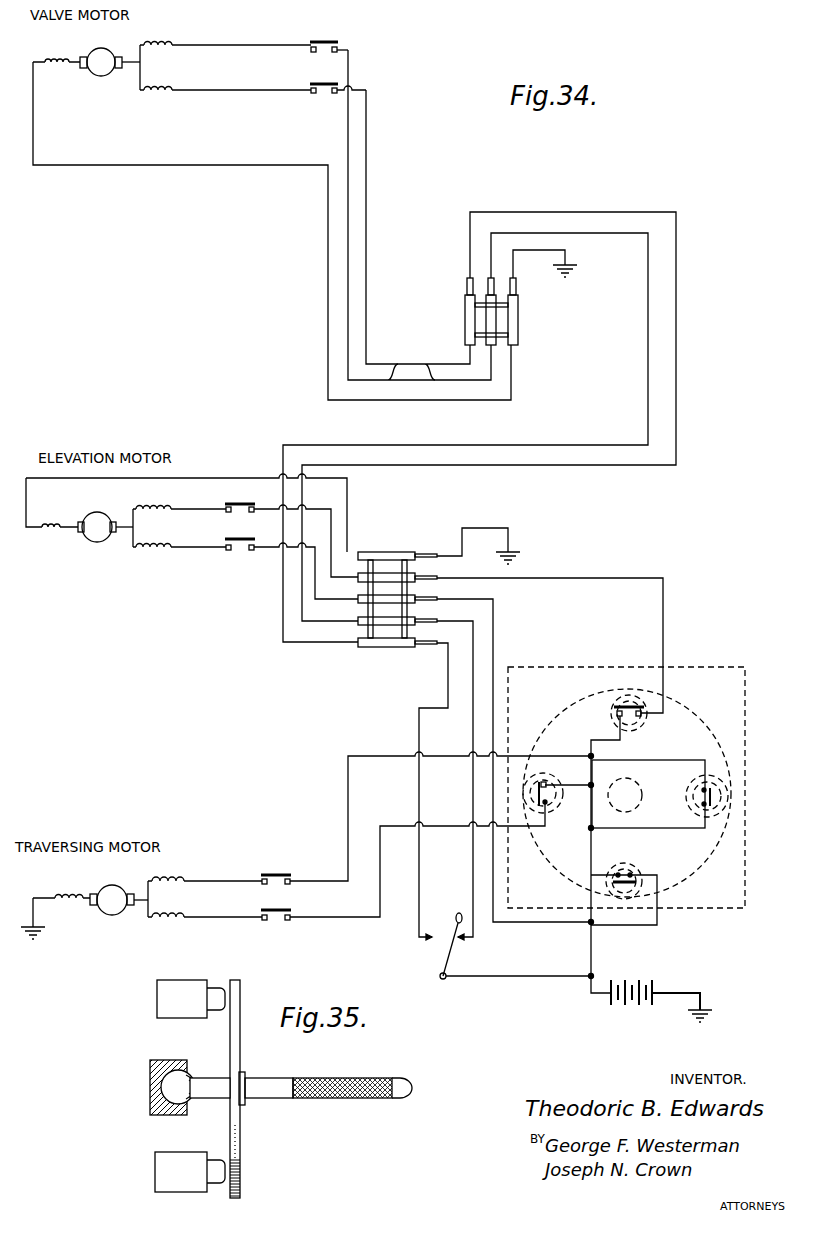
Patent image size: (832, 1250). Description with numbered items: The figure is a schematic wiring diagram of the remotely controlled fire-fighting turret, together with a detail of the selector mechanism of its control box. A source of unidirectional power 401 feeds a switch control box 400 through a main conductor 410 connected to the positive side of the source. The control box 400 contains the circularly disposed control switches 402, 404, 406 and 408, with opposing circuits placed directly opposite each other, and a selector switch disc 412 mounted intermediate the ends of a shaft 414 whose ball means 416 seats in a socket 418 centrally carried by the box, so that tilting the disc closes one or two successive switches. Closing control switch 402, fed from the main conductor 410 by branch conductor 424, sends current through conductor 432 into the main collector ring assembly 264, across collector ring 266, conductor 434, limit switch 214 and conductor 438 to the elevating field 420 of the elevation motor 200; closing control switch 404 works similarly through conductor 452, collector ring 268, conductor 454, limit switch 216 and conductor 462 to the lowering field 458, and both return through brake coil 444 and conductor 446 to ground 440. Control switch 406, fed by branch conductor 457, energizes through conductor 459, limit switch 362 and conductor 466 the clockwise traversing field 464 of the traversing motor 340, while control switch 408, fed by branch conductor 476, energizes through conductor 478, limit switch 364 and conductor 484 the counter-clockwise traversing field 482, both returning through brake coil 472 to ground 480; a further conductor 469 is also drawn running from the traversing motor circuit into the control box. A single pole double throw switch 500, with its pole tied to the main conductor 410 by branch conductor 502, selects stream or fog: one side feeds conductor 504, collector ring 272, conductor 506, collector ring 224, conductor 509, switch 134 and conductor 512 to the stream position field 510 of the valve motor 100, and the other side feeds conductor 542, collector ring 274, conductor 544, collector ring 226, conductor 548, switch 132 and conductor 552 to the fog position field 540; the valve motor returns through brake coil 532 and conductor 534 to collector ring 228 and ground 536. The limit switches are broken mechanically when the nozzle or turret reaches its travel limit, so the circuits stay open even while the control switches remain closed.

In FIG. 34, the motor 100 is at (103, 76).
In FIG. 34, the switch 132 is at (330, 30).
In FIG. 34, the switch 134 is at (323, 96).
In FIG. 34, the motor 200 is at (84, 541).
In FIG. 34, the switch 214 is at (265, 500).
In FIG. 34, the switch 216 is at (232, 556).
In FIG. 34, the collector ring 224 is at (462, 326).
In FIG. 34, the collector ring 226 is at (498, 350).
In FIG. 34, the collector ring 228 is at (520, 338).
In FIG. 34, the main collector ring assembly 264 is at (383, 548).
In FIG. 34, the collector ring 266 is at (393, 577).
In FIG. 34, the collector ring 268 is at (360, 600).
In FIG. 34, the collector ring 272 is at (362, 628).
In FIG. 34, the collector ring 274 is at (383, 641).
In FIG. 34, the motor 340 is at (110, 915).
In FIG. 34, the switch 362 is at (290, 878).
In FIG. 34, the switch 364 is at (275, 923).
In FIG. 34, the switch control box 400 is at (737, 667).
In FIG. 34, the source of unidirectional power 401 is at (665, 980).
In FIG. 34, the control switch 402 is at (612, 704).
In FIG. 35, the control switch 402 is at (160, 1003).
In FIG. 34, the control switch 404 is at (632, 888).
In FIG. 35, the control switch 404 is at (160, 1170).
In FIG. 34, the control switch 406 is at (716, 796).
In FIG. 34, the control switch 408 is at (548, 814).
In FIG. 34, the main conductor 410 is at (591, 953).
In FIG. 34, the selector switch disc 412 is at (718, 740).
In FIG. 35, the selector switch disc 412 is at (241, 1148).
In FIG. 35, the shaft 414 is at (272, 1100).
In FIG. 35, the ball means 416 is at (150, 1086).
In FIG. 35, the socket 418 is at (160, 1062).
In FIG. 34, the elevating field 420 is at (160, 503).
In FIG. 34, the branch conductor 424 is at (608, 740).
In FIG. 34, the conductor 432 is at (663, 652).
In FIG. 34, the conductor 434 is at (325, 565).
In FIG. 34, the conductor 438 is at (218, 512).
In FIG. 34, the ground 440 is at (510, 548).
In FIG. 34, the brake coil 444 is at (48, 538).
In FIG. 34, the conductor 446 is at (62, 478).
In FIG. 34, the conductor 452 is at (493, 652).
In FIG. 34, the conductor 454 is at (318, 590).
In FIG. 34, the branch conductor 457 is at (705, 830).
In FIG. 34, the lowering field 458 is at (148, 556).
In FIG. 34, the conductor 459 is at (648, 760).
In FIG. 34, the conductor 462 is at (198, 552).
In FIG. 34, the clockwise traversing field 464 is at (186, 880).
In FIG. 34, the conductor 466 is at (220, 883).
In FIG. 34, the conductor 469 is at (378, 749).
In FIG. 34, the brake coil 472 is at (60, 884).
In FIG. 34, the branch conductor 476 is at (573, 783).
In FIG. 34, the conductor 478 is at (527, 850).
In FIG. 34, the ground 480 is at (40, 938).
In FIG. 34, the counter-clockwise traversing field 482 is at (166, 926).
In FIG. 34, the conductor 484 is at (205, 920).
In FIG. 34, the single pole double throw switch 500 is at (436, 956).
In FIG. 34, the branch conductor 502 is at (526, 980).
In FIG. 34, the conductor 504 is at (473, 760).
In FIG. 34, the conductor 506 is at (634, 212).
In FIG. 34, the conductor 509 is at (366, 193).
In FIG. 34, the stream position field 510 is at (166, 93).
In FIG. 34, the conductor 512 is at (279, 92).
In FIG. 34, the brake coil 532 is at (66, 68).
In FIG. 34, the conductor 534 is at (148, 165).
In FIG. 34, the ground 536 is at (580, 270).
In FIG. 34, the fog position field 540 is at (172, 38).
In FIG. 34, the conductor 542 is at (419, 794).
In FIG. 34, the conductor 544 is at (548, 233).
In FIG. 34, the conductor 548 is at (348, 137).
In FIG. 34, the conductor 552 is at (238, 48).